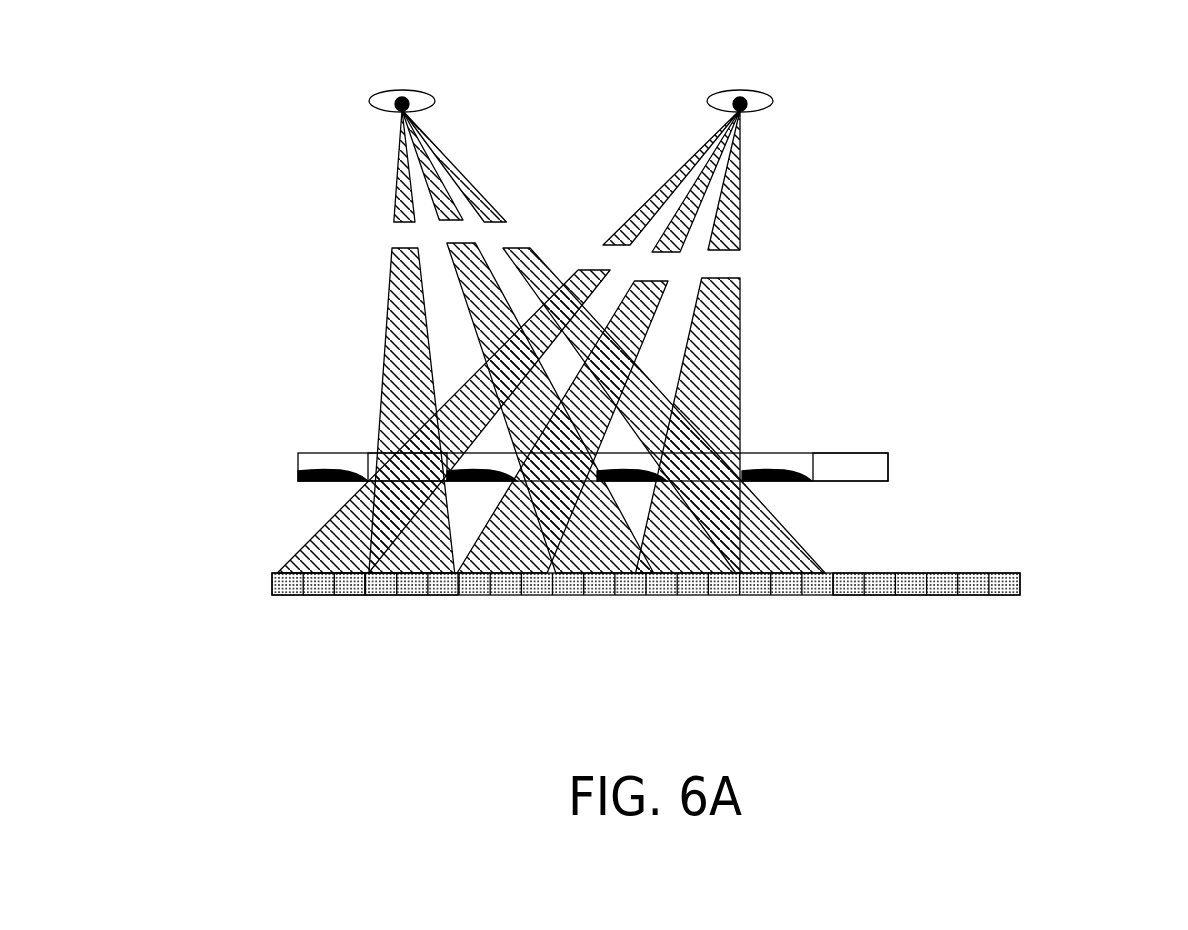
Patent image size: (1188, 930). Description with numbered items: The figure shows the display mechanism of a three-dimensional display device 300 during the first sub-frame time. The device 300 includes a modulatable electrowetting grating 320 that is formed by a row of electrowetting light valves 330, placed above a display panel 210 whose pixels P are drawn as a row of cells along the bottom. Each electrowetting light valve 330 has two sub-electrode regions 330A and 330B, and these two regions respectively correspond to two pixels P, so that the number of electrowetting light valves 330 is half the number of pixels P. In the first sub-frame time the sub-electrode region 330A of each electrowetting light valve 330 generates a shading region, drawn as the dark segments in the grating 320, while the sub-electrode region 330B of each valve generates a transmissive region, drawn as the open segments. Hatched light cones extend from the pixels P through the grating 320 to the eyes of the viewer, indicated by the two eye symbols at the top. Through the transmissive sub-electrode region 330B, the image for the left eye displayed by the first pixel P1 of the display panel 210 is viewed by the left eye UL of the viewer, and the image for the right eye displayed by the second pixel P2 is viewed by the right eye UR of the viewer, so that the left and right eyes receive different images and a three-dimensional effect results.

The three-dimensional display device 300 is at (641, 465).
The modulatable electrowetting grating 320 is at (888, 463).
The electrowetting light valve 330 is at (512, 456).
The sub-electrode region 330A is at (823, 433).
The sub-electrode region 330B is at (902, 433).
The display panel 210 is at (681, 570).
The first pixel P1 is at (365, 603).
The second pixel P2 is at (458, 603).
The pixel P is at (927, 603).
The right eye UR is at (402, 76).
The left eye UL is at (740, 76).